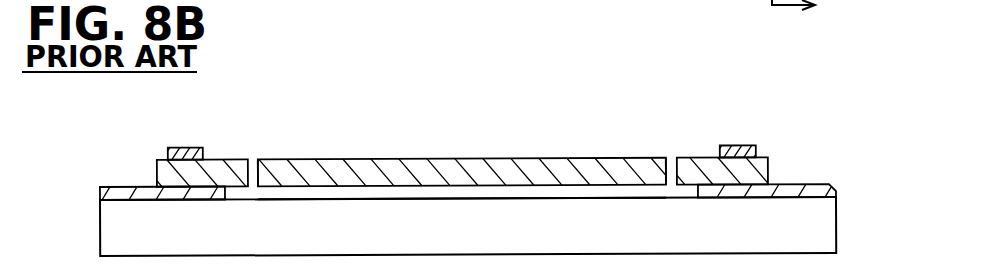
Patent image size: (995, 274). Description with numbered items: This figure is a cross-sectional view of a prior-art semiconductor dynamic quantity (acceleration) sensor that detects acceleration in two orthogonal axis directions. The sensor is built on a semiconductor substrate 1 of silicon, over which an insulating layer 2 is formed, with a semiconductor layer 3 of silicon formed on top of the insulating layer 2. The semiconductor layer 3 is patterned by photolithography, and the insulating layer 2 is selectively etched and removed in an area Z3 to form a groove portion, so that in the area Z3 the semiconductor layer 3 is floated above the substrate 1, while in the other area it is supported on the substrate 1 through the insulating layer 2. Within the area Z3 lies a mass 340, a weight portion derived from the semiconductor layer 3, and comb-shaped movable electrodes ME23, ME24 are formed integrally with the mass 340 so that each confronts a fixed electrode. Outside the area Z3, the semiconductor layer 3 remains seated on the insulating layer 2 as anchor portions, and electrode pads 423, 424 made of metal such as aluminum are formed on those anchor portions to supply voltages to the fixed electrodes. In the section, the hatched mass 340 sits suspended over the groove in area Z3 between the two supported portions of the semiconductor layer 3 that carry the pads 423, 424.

The semiconductor substrate 1 is at (100, 245).
The insulating layer 2 is at (100, 190).
The semiconductor layer 3 is at (141, 166).
The electrode pad 423 is at (173, 148).
The electrode pad 424 is at (733, 146).
The mass 340 is at (408, 158).
The area Z3 is at (368, 200).
The movable electrode ME23 is at (292, 151).
The movable electrode ME24 is at (649, 146).